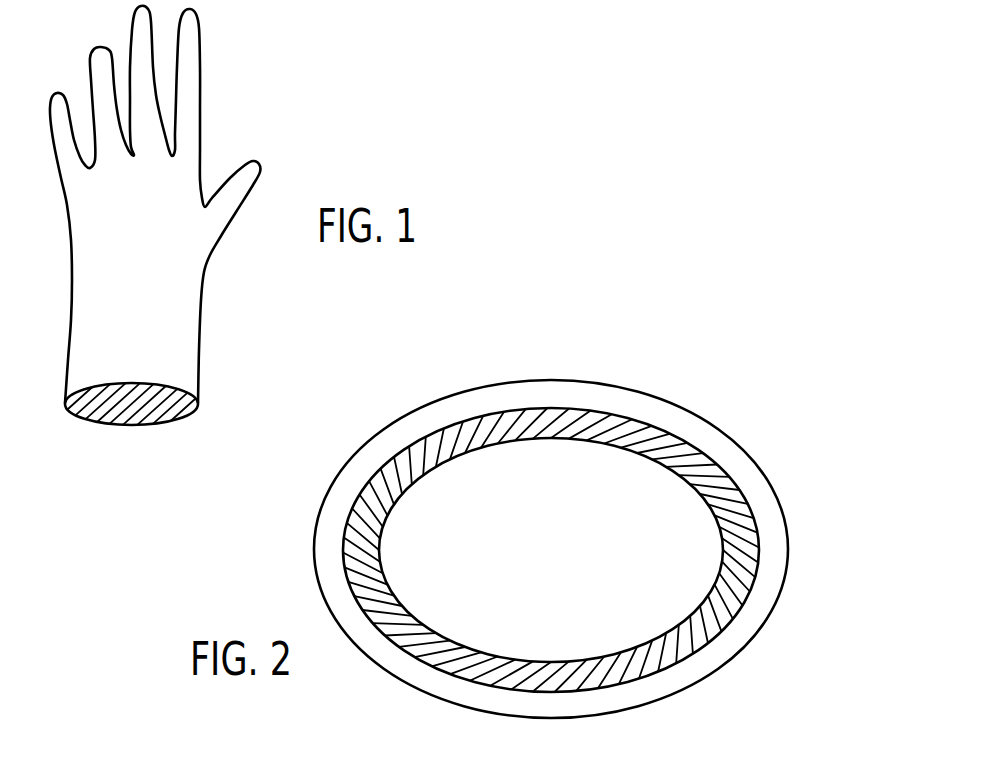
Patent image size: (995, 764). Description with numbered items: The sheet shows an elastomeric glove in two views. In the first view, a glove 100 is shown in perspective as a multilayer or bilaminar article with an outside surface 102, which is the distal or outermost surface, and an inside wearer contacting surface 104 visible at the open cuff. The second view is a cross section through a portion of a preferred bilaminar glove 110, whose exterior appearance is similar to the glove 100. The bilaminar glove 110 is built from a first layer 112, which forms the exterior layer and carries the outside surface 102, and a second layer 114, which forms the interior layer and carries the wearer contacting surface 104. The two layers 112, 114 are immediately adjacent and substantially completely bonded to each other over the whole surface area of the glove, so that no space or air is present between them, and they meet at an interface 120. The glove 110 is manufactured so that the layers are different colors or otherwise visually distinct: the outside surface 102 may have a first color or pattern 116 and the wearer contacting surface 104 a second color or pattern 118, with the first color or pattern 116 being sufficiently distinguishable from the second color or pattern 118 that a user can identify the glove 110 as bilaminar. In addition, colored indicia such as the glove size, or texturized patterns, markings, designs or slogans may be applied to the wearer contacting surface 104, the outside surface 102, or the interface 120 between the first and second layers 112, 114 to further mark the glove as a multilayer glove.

In FIG. 1, the glove 100 is at (232, 119).
In FIG. 1, the outside surface 102 is at (196, 330).
In FIG. 2, the outside surface 102 is at (753, 460).
In FIG. 1, the wearer contacting surface 104 is at (167, 415).
In FIG. 2, the wearer contacting surface 104 is at (580, 688).
In FIG. 2, the bilaminar glove 110 is at (664, 371).
In FIG. 2, the first layer 112 is at (500, 707).
In FIG. 2, the second layer 114 is at (427, 667).
In FIG. 2, the first color or pattern 116 is at (677, 675).
In FIG. 2, the second color or pattern 118 is at (380, 577).
In FIG. 2, the interface 120 is at (702, 423).